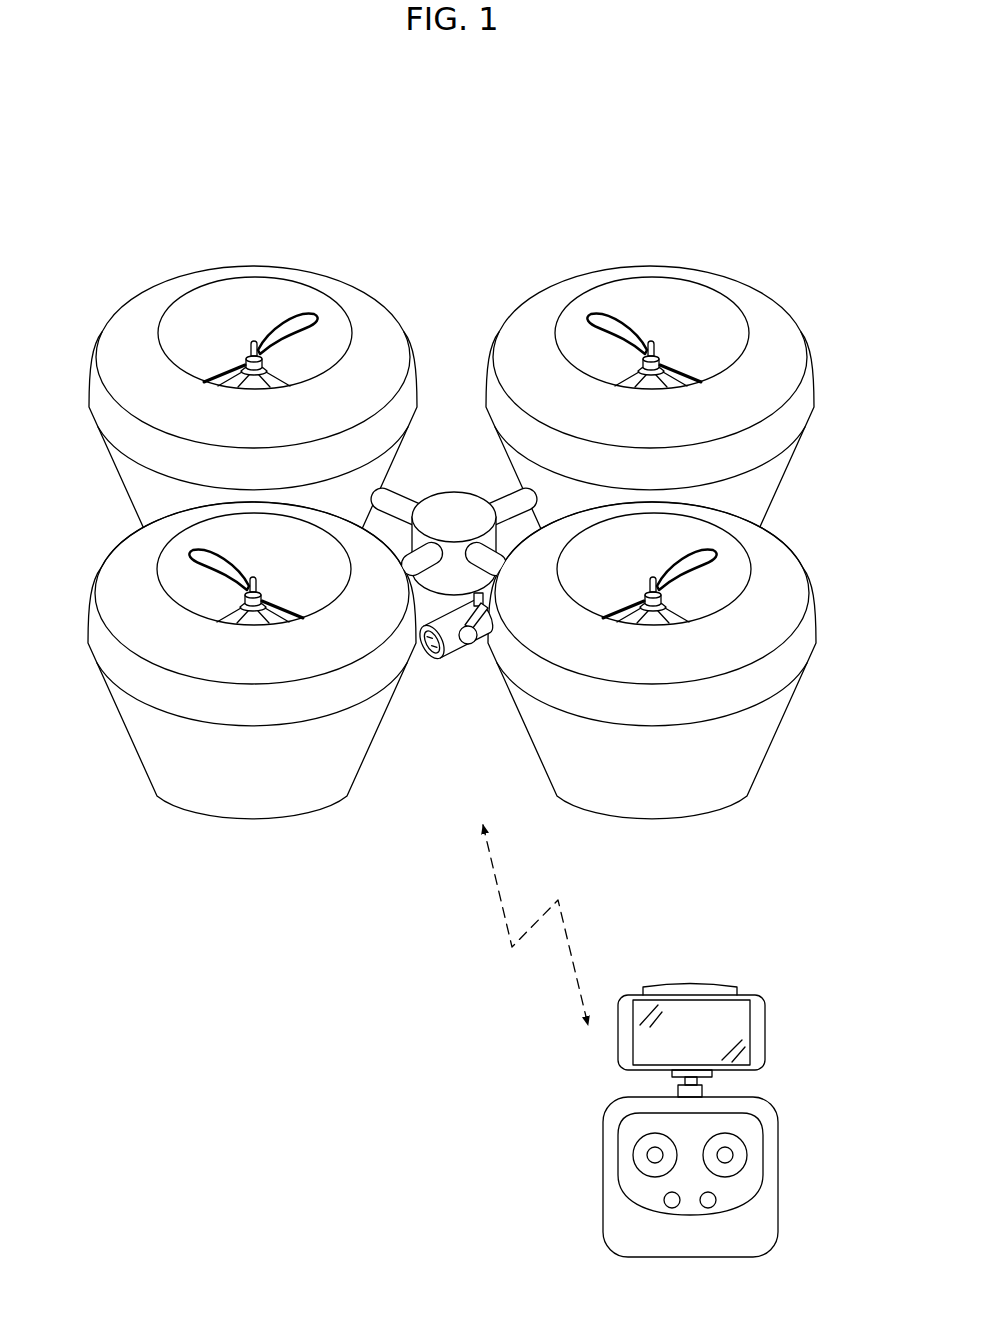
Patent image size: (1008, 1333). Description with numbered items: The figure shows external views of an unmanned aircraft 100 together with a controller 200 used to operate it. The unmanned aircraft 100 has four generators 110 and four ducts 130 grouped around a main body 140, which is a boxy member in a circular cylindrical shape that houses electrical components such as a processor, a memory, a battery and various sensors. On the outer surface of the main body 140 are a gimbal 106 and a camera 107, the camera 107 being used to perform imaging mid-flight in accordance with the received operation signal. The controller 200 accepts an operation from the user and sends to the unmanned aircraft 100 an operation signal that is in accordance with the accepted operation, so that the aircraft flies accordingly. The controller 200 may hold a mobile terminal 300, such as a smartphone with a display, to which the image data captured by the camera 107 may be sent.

The unmanned aircraft 100 is at (158, 257).
The generator 110 is at (252, 335).
The duct 130 is at (368, 307).
The main body 140 is at (452, 505).
The gimbal 106 is at (483, 640).
The camera 107 is at (450, 653).
The controller 200 is at (615, 1205).
The mobile terminal 300 is at (625, 1042).